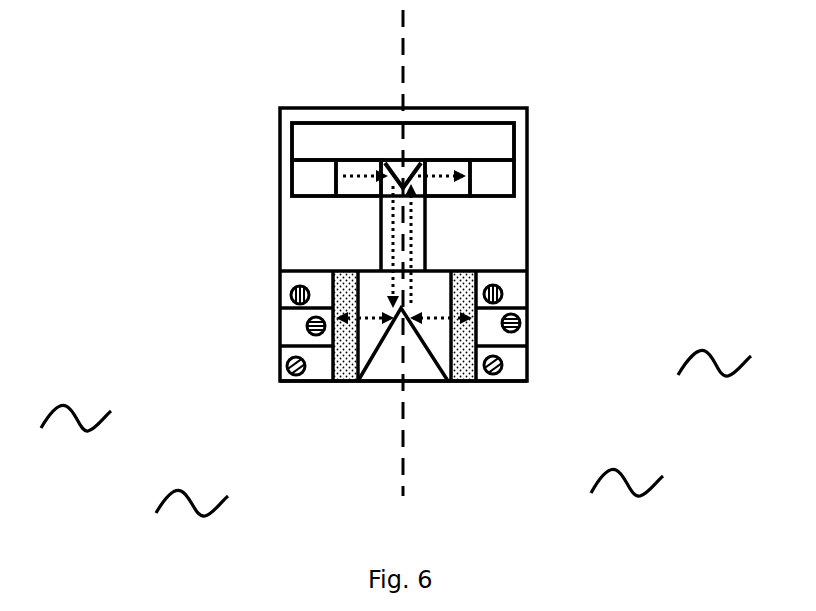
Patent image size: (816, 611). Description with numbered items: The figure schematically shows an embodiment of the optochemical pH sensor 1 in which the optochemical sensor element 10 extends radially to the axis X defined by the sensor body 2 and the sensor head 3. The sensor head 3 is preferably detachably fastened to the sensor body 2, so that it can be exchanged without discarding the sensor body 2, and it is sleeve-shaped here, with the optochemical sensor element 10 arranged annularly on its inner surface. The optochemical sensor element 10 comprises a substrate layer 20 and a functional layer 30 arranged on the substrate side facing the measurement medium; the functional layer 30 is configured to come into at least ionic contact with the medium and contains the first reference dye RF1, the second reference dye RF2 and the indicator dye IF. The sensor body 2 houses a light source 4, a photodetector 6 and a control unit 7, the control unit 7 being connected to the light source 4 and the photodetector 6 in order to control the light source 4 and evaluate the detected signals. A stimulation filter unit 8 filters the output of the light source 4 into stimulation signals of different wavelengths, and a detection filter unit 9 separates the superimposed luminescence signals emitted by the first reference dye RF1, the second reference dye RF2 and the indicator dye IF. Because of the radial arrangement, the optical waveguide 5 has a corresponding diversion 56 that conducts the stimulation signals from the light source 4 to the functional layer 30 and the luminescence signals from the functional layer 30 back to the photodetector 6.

The optochemical pH sensor 1 is at (104, 159).
The sensor body 2 is at (226, 216).
The sensor head 3 is at (164, 331).
The light source 4 is at (310, 183).
The optical waveguide 5 is at (413, 258).
The photodetector 6 is at (488, 170).
The control unit 7 is at (500, 133).
The stimulation filter unit 8 is at (355, 173).
The detection filter unit 9 is at (440, 173).
The optochemical sensor element 10 is at (250, 416).
The substrate layer 20 is at (345, 390).
The functional layer 30 is at (290, 390).
The diversion 56 is at (413, 365).
The axis X is at (400, 85).
The first reference dye RF1 is at (301, 299).
The second reference dye RF2 is at (307, 330).
The indicator dye IF is at (297, 368).